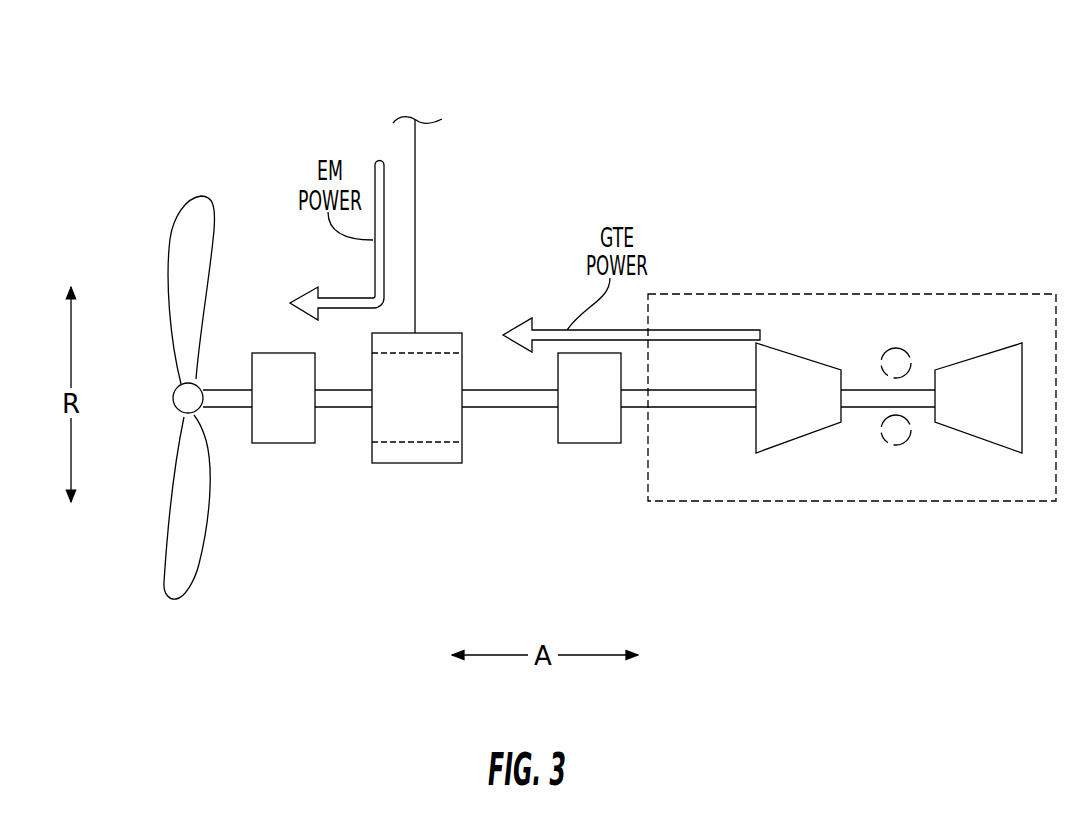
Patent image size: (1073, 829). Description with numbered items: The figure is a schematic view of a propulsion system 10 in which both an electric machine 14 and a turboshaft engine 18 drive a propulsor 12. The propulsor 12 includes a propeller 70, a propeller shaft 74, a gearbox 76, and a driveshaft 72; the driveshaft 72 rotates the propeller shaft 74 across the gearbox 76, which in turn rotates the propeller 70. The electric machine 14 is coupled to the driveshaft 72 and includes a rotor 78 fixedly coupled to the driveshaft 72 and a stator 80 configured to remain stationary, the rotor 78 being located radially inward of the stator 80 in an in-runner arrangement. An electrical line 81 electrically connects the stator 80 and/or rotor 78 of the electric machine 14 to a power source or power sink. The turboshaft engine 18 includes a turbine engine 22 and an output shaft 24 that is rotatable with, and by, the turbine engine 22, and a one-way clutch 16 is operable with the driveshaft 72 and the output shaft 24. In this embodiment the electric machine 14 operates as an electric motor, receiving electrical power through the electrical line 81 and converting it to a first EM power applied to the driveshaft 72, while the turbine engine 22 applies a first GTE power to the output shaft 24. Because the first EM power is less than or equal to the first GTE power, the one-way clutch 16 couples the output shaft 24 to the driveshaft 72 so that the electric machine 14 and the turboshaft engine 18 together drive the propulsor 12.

The propulsion system 10 is at (734, 154).
The propulsor 12 is at (286, 211).
The electric machine 14 is at (427, 463).
The one-way clutch 16 is at (593, 443).
The turboshaft engine 18 is at (815, 294).
The turbine engine 22 is at (923, 320).
The output shaft 24 is at (699, 465).
The propeller 70 is at (186, 235).
The driveshaft 72 is at (327, 407).
The propeller shaft 74 is at (211, 407).
The gearbox 76 is at (278, 443).
The rotor 78 is at (462, 425).
The stator 80 is at (462, 457).
The electrical line 81 is at (415, 220).